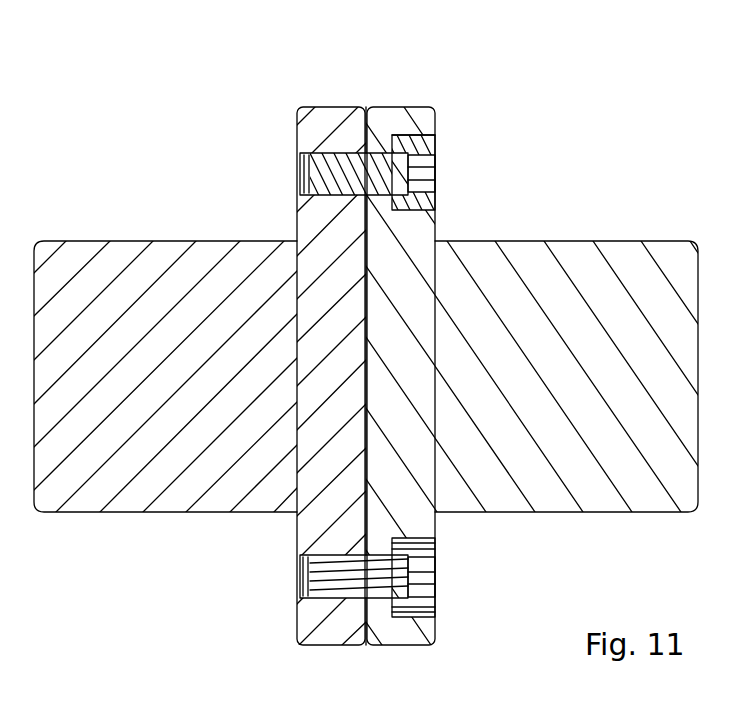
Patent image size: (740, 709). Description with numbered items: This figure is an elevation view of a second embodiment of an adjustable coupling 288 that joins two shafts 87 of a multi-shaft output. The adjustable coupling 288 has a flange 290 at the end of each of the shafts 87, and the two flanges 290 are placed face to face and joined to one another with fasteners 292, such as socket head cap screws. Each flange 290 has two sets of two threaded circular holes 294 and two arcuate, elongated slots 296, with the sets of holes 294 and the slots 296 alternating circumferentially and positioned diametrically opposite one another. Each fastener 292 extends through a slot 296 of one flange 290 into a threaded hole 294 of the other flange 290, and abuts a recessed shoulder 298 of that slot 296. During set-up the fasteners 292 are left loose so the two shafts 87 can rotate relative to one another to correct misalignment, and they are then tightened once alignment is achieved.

The shaft 87 is at (130, 241).
The adjustable coupling 288 is at (240, 114).
The flange 290 is at (380, 107).
The fastener 292 is at (435, 195).
The threaded circular hole 294 is at (300, 172).
The arcuate elongated slot 296 is at (435, 148).
The recessed shoulder 298 is at (404, 134).